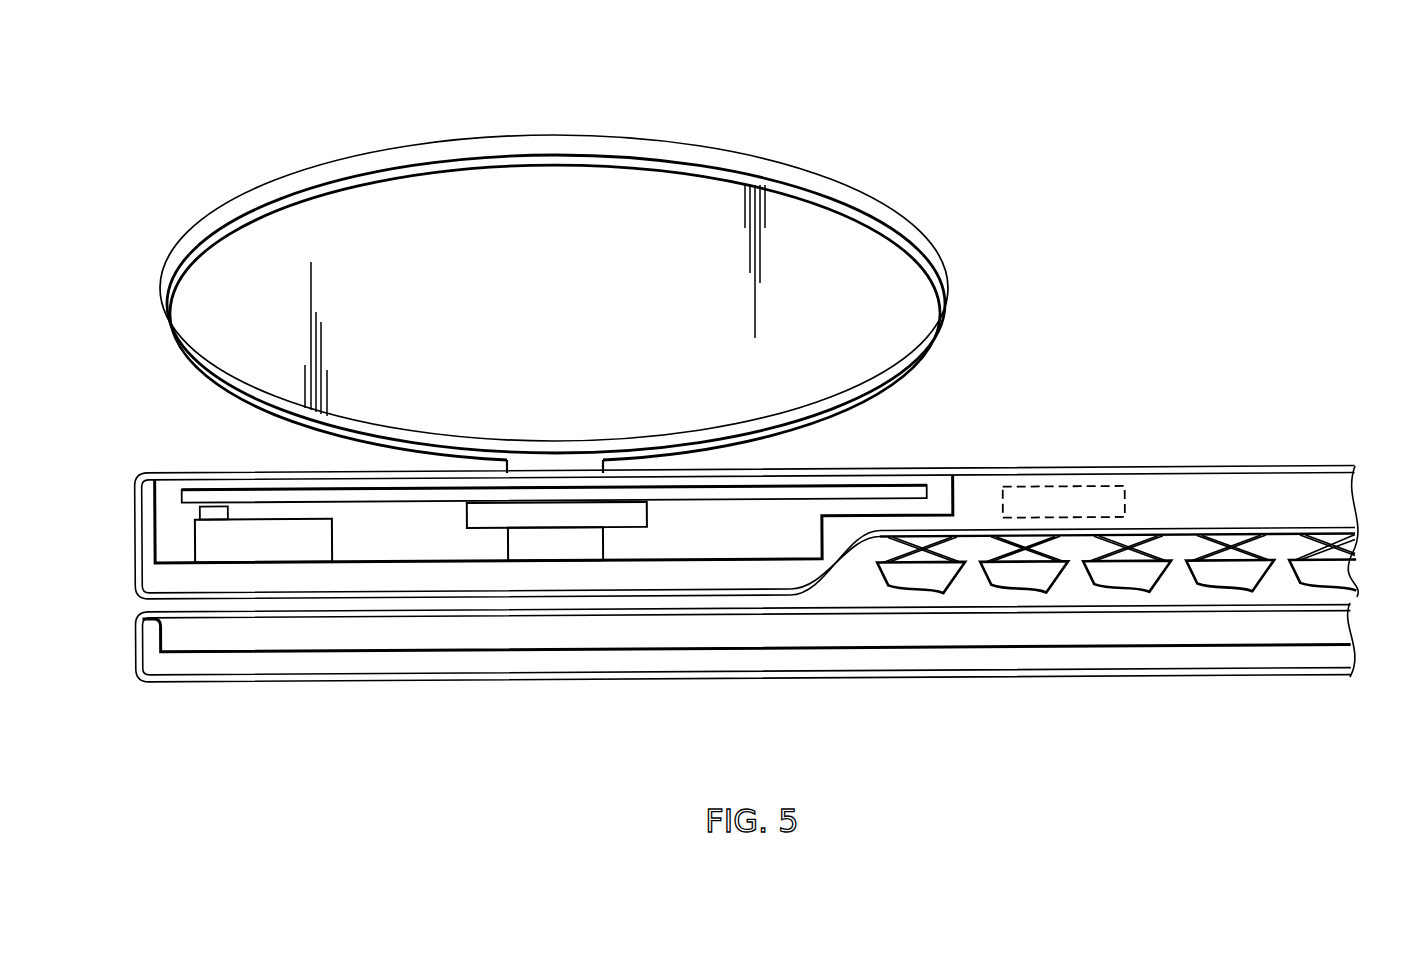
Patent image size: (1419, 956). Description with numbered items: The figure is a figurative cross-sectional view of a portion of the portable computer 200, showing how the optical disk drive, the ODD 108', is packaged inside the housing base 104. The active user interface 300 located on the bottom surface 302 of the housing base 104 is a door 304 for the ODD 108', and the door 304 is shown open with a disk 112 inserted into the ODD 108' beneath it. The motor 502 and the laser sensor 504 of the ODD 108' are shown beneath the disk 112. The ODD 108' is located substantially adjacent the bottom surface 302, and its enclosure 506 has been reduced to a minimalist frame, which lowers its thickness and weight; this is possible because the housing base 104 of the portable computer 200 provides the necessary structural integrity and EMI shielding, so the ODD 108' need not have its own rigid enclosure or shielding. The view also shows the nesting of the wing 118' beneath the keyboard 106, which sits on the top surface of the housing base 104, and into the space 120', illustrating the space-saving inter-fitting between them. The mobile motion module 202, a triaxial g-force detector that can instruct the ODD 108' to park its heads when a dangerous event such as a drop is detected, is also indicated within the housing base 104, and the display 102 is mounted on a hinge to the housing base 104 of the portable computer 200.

The portable computer 200 is at (296, 101).
The door 304 is at (722, 153).
The active user interface 300 is at (975, 377).
The bottom surface 302 is at (1230, 469).
The wing 118' is at (599, 492).
The space 120' is at (804, 628).
The disk 112 is at (262, 490).
The laser sensor 504 is at (205, 545).
The ODD 108' is at (323, 646).
The enclosure 506 is at (681, 562).
The motor 502 is at (562, 541).
The mobile motion module 202 is at (1068, 490).
The keyboard 106 is at (1020, 588).
The housing base 104 is at (1355, 498).
The display 102 is at (328, 628).